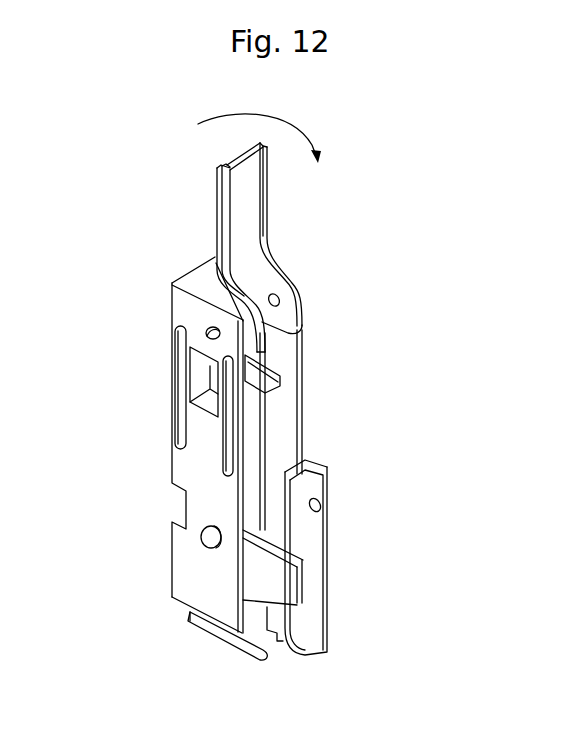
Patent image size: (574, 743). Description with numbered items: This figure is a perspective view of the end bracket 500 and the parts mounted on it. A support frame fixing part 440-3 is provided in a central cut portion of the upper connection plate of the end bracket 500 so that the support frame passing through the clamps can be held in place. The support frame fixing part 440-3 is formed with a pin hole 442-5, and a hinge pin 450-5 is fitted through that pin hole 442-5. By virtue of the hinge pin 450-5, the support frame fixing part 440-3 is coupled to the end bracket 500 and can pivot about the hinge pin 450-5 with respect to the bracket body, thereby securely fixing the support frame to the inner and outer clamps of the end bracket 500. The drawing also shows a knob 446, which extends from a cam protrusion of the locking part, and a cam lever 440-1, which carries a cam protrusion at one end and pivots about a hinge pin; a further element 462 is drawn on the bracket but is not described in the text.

The knob 446 is at (253, 203).
The support frame fixing part 440-3 is at (332, 247).
The pin hole 442-5 is at (293, 298).
The hinge pin 450-5 is at (207, 331).
The end bracket 500 is at (303, 433).
The pin 462 is at (210, 537).
The cam lever 440-1 is at (333, 555).